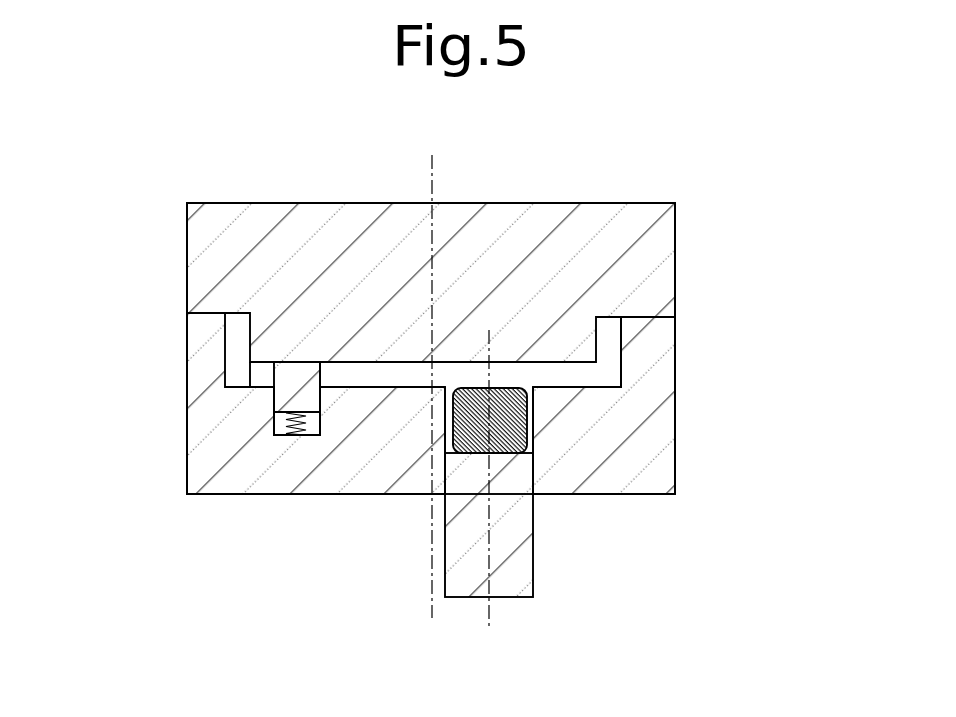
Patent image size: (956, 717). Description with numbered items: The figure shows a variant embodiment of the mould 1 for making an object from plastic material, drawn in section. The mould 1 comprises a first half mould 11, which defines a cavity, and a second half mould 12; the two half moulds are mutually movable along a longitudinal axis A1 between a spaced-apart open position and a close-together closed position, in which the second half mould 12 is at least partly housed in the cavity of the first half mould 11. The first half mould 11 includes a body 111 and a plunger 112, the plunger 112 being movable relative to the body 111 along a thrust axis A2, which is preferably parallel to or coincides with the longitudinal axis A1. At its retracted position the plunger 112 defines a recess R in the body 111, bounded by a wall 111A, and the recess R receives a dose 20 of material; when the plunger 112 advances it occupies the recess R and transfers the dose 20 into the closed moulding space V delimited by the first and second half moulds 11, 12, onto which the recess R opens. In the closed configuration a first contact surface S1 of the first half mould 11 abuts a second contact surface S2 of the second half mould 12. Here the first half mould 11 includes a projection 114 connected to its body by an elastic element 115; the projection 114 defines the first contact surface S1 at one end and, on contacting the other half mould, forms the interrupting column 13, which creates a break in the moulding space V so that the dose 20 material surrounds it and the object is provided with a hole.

The mould 1 is at (157, 240).
The first half mould 11 is at (700, 413).
The second half mould 12 is at (697, 248).
The interrupting column 13 is at (274, 375).
The dose 20 is at (518, 418).
The body 111 is at (598, 482).
The bore wall 111A is at (533, 432).
The plunger 112 is at (469, 574).
The projection 114 is at (287, 396).
The elastic element 115 is at (295, 436).
The longitudinal axis A1 is at (432, 185).
The thrust axis A2 is at (490, 608).
The closed moulding space V is at (553, 372).
The recess R is at (445, 430).
The first contact surface S1 is at (307, 365).
The second contact surface S2 is at (288, 362).